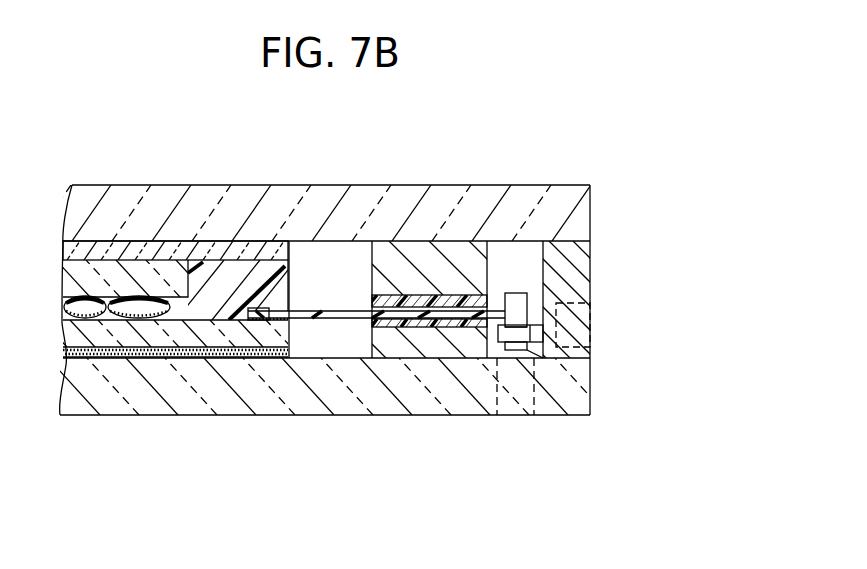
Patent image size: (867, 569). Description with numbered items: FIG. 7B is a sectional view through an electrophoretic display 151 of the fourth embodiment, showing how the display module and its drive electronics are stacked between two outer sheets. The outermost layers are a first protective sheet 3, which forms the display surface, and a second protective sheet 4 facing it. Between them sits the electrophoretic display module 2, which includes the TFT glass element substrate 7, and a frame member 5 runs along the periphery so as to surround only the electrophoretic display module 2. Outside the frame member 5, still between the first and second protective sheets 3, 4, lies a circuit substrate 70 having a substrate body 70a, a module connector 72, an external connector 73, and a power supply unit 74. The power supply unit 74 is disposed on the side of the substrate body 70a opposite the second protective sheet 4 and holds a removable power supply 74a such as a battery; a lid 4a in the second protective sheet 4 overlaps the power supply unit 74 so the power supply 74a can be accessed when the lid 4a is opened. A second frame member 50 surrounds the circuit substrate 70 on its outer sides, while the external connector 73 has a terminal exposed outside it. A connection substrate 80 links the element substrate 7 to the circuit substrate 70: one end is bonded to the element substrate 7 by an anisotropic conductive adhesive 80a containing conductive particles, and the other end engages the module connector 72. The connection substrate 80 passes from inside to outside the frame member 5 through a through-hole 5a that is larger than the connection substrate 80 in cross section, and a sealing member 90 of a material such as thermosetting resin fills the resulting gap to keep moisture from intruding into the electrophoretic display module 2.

The electrophoretic display 151 is at (616, 166).
The electrophoretic display module 2 is at (303, 275).
The first protective sheet 3 is at (176, 200).
The second protective sheet 4 is at (157, 401).
The lid 4a is at (497, 398).
The frame member 5 is at (462, 250).
The through-hole 5a is at (402, 295).
The element substrate 7 is at (98, 322).
The second frame member 50 is at (586, 247).
The circuit substrate 70 is at (516, 272).
The substrate body 70a is at (527, 327).
The module connector 72 is at (521, 293).
The external connector 73 is at (584, 321).
The power supply unit 74 is at (539, 364).
The power supply 74a is at (513, 351).
The connection substrate 80 is at (332, 330).
The anisotropic conductive adhesive 80a is at (258, 330).
The sealing member 90 is at (450, 328).